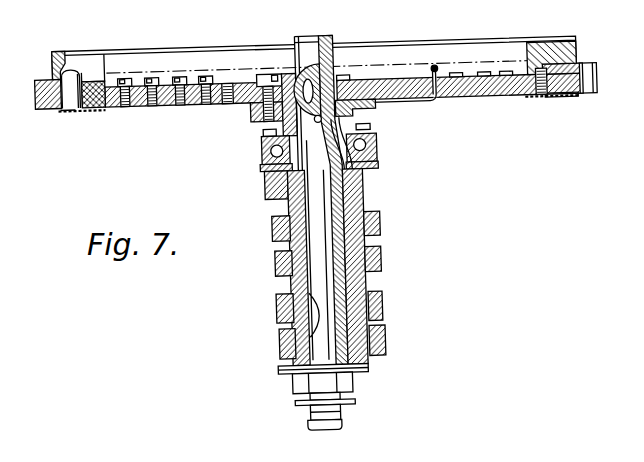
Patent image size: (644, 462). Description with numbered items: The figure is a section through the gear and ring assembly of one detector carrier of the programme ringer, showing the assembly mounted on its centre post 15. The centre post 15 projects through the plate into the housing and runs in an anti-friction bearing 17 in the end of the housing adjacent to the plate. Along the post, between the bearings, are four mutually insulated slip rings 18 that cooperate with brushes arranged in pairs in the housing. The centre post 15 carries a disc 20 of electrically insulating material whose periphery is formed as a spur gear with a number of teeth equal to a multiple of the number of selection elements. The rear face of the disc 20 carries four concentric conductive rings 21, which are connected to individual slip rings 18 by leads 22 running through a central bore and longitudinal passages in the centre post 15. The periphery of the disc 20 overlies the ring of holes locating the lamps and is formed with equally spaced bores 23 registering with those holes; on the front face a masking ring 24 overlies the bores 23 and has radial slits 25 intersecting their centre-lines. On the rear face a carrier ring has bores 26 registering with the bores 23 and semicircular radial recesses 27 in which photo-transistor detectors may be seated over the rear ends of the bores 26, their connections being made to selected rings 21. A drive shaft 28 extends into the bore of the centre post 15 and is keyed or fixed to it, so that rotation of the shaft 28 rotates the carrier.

The centre post 15 is at (378, 278).
The anti-friction bearing 17 is at (378, 150).
The slip rings 18 is at (376, 222).
The disc 20 is at (580, 97).
The concentric conductive rings 21 is at (502, 73).
The leads 22 is at (427, 101).
The bores 23 is at (58, 106).
The masking ring 24 is at (104, 108).
The radial slits 25 is at (71, 111).
The bores 26 is at (78, 68).
The radial recesses 27 is at (101, 68).
The drive shaft 28 is at (305, 48).